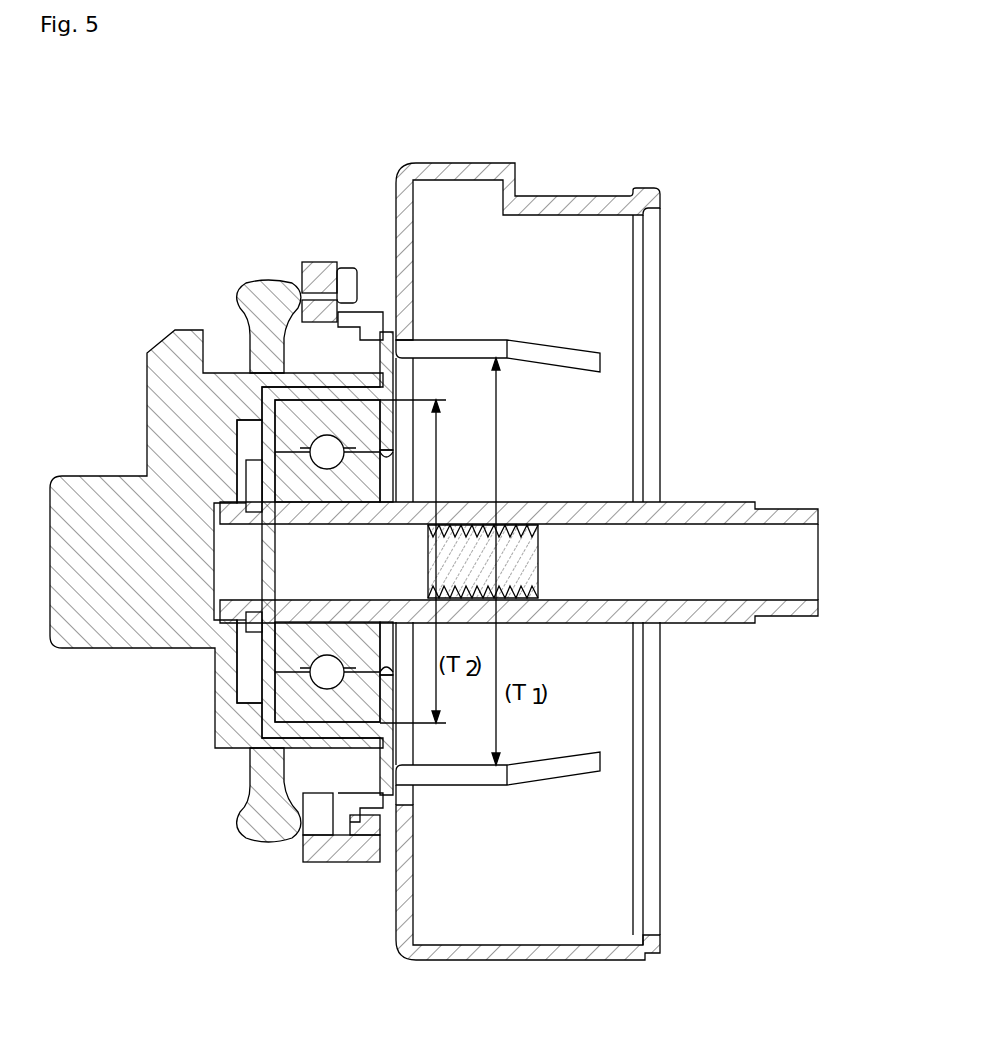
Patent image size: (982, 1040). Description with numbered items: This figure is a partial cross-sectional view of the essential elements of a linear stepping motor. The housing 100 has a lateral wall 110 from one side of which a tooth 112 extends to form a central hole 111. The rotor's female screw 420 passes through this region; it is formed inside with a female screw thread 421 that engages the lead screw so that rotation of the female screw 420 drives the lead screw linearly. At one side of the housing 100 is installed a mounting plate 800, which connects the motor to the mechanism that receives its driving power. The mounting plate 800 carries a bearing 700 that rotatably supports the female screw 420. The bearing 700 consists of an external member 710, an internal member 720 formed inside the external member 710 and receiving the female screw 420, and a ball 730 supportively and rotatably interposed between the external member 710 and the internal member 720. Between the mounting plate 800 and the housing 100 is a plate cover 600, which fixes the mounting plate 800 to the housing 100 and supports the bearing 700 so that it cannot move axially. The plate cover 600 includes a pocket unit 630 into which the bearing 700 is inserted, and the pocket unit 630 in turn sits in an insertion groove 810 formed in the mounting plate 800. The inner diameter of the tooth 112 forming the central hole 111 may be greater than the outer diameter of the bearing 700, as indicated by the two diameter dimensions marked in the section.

The housing 100 is at (543, 510).
The lateral wall 110 is at (396, 232).
The central hole 111 is at (458, 360).
The tooth 112 is at (586, 360).
The female screw 420 is at (519, 518).
The female screw thread 421 is at (512, 555).
The plate cover 600 is at (262, 712).
The pocket unit 630 is at (330, 402).
The bearing 700 is at (207, 584).
The external member 710 is at (297, 420).
The internal member 720 is at (300, 645).
The ball 730 is at (325, 680).
The mounting plate 800 is at (173, 366).
The insertion groove 810 is at (328, 712).